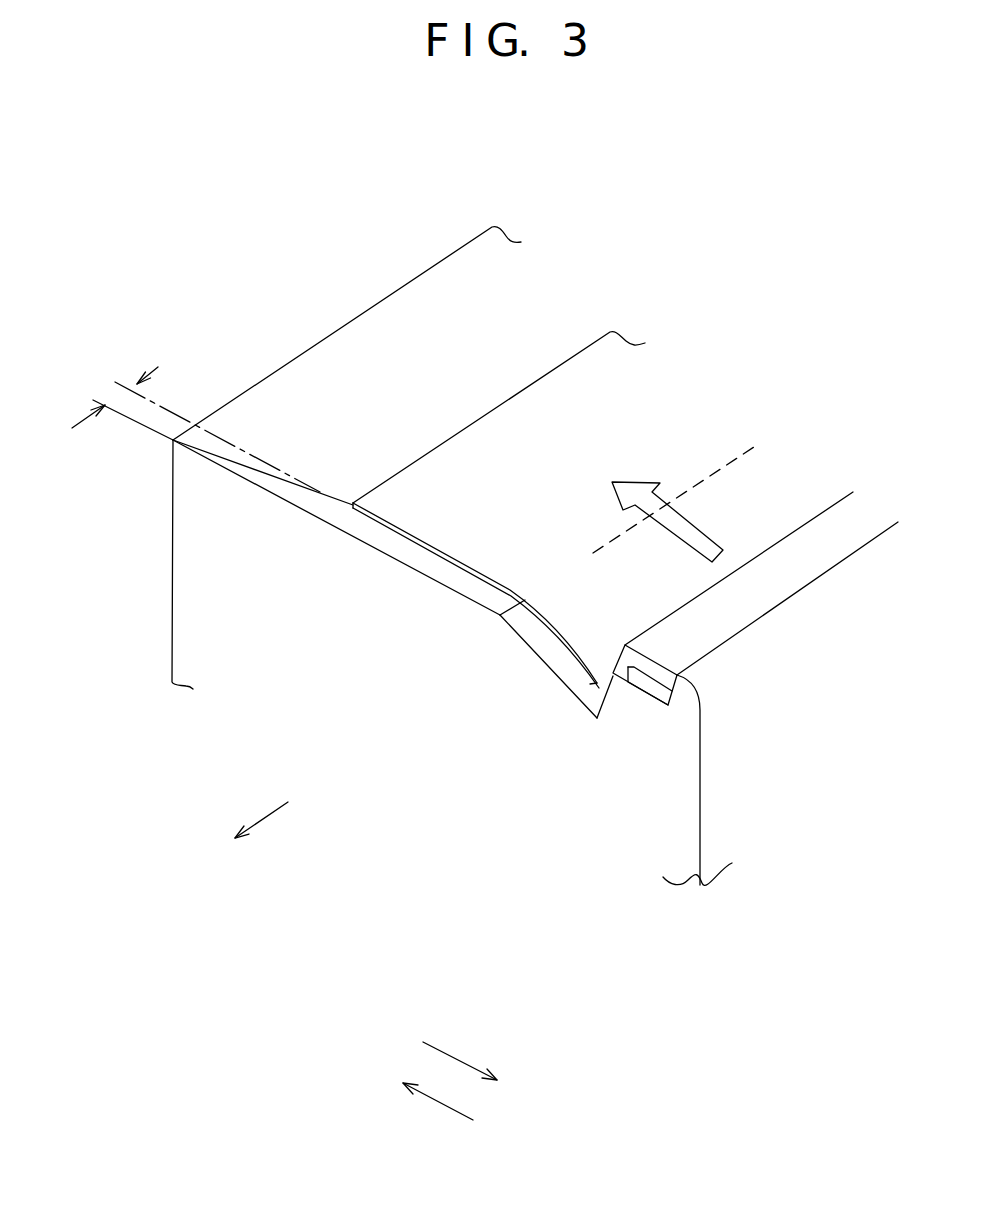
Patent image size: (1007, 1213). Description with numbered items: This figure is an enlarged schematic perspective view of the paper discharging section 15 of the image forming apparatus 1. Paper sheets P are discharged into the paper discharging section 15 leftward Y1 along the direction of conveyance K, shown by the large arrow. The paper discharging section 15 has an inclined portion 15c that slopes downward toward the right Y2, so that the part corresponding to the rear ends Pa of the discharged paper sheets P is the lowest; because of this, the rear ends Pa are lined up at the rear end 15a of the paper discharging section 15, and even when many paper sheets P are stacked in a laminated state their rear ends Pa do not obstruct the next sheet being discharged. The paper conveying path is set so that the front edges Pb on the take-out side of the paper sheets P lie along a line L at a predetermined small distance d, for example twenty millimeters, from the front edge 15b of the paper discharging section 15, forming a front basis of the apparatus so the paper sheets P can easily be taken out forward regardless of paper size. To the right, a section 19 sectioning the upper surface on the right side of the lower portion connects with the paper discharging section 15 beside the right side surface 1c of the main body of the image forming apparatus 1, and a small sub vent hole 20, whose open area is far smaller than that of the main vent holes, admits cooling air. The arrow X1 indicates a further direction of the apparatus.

The image forming apparatus 1 is at (207, 585).
The right side surface 1c is at (777, 735).
The paper discharging section 15 is at (435, 310).
The rear end 15a is at (602, 705).
The front edge 15b is at (317, 522).
The inclined portion 15c is at (557, 658).
The section 19 is at (770, 583).
The sub vent hole 20 is at (653, 690).
The paper sheets P is at (598, 397).
The rear ends Pa is at (590, 680).
The front edges Pb is at (445, 560).
The line L is at (306, 487).
The predetermined small distance d is at (122, 387).
The direction of conveyance K is at (697, 537).
The direction X1 is at (242, 839).
The leftward direction Y1 is at (460, 1116).
The rightward direction Y2 is at (484, 1073).